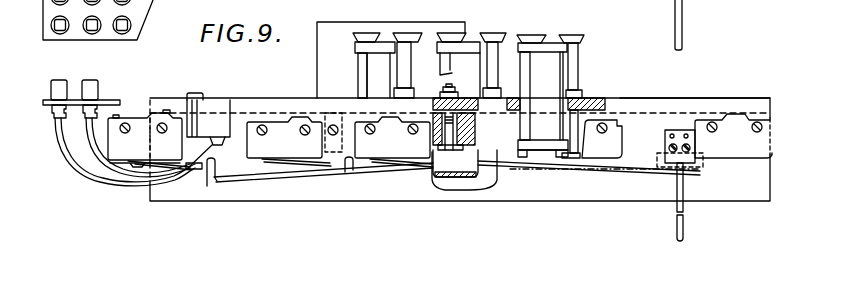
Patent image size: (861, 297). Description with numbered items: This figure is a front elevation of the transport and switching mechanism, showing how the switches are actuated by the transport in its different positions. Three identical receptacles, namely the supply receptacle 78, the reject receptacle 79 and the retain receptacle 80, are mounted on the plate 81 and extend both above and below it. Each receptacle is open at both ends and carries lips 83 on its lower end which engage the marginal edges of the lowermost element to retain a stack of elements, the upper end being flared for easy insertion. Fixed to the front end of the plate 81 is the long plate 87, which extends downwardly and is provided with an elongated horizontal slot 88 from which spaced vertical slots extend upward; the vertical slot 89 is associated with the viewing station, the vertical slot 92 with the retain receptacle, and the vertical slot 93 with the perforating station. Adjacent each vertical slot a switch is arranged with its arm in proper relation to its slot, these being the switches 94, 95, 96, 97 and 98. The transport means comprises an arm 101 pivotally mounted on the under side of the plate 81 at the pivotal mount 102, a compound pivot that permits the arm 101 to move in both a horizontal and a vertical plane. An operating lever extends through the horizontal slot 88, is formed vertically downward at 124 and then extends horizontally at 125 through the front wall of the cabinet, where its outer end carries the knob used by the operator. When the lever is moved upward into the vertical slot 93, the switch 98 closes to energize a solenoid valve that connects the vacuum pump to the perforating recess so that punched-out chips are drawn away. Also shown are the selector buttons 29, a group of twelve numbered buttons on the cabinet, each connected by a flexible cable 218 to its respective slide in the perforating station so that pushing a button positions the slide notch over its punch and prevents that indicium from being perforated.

The selector buttons 29 is at (127, 25).
The supply receptacle 78 is at (575, 52).
The reject receptacle 79 is at (487, 33).
The retain receptacle 80 is at (387, 33).
The plate 81 is at (598, 98).
The lips 83 is at (570, 155).
The long plate 87 is at (697, 110).
The elongated horizontal slot 88 is at (401, 172).
The vertical slot 89 is at (684, 166).
The vertical slot 92 is at (350, 172).
The vertical slot 93 is at (212, 190).
The switch 94 is at (741, 123).
The switch 95 is at (612, 132).
The switch 96 is at (357, 128).
The switch 97 is at (278, 123).
The switch 98 is at (132, 124).
The arm 101 is at (452, 73).
The pivotal mount 102 is at (462, 151).
The vertically downward portion of operating lever 124 is at (677, 208).
The horizontal extension of operating lever 125 is at (684, 242).
The flexible cable 218 is at (130, 187).